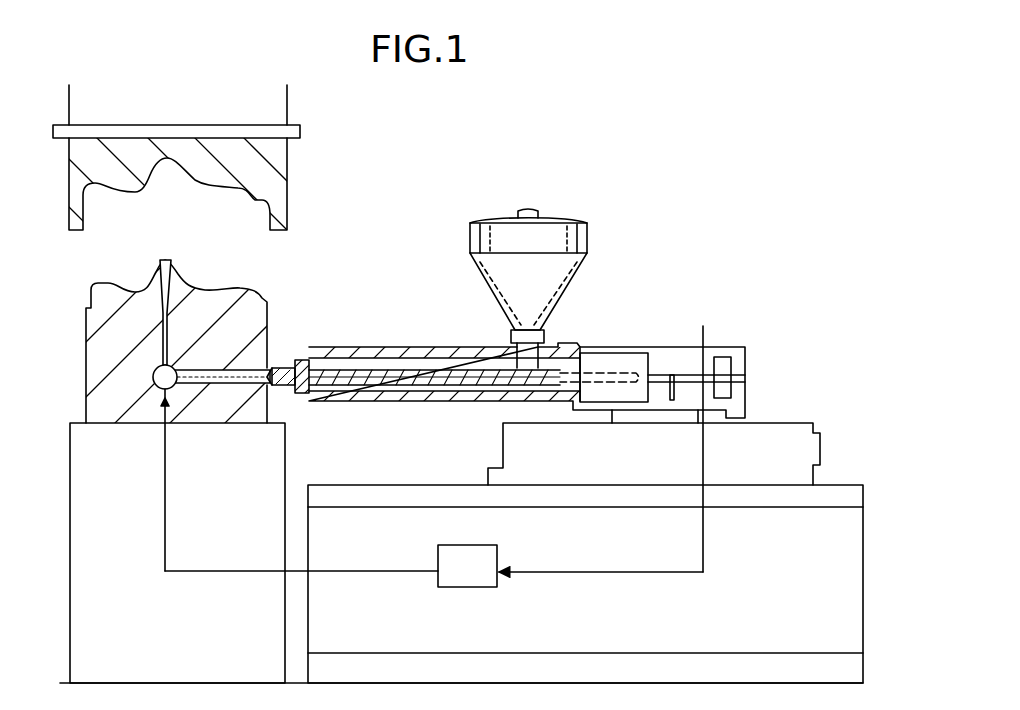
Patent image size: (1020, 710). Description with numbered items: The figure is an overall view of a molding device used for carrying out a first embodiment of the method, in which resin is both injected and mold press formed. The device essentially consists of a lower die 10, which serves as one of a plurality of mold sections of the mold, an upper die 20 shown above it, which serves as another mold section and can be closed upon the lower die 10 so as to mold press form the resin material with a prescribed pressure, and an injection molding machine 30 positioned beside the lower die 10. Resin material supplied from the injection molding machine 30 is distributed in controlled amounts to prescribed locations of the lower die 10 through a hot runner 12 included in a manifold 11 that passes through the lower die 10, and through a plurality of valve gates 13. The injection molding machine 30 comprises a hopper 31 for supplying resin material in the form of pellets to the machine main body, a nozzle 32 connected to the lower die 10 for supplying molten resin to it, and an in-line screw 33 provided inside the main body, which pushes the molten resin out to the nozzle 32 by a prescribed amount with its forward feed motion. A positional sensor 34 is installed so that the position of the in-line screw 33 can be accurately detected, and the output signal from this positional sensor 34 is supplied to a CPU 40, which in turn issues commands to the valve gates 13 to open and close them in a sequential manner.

The lower die 10 is at (243, 318).
The manifold 11 is at (233, 388).
The hot runner 12 is at (203, 386).
The valve gates 13 is at (153, 389).
The upper die 20 is at (268, 183).
The injection molding machine 30 is at (592, 316).
The hopper 31 is at (548, 240).
The nozzle 32 is at (274, 386).
The in-line screw 33 is at (425, 404).
The positional sensor 34 is at (609, 436).
The CPU 40 is at (480, 578).